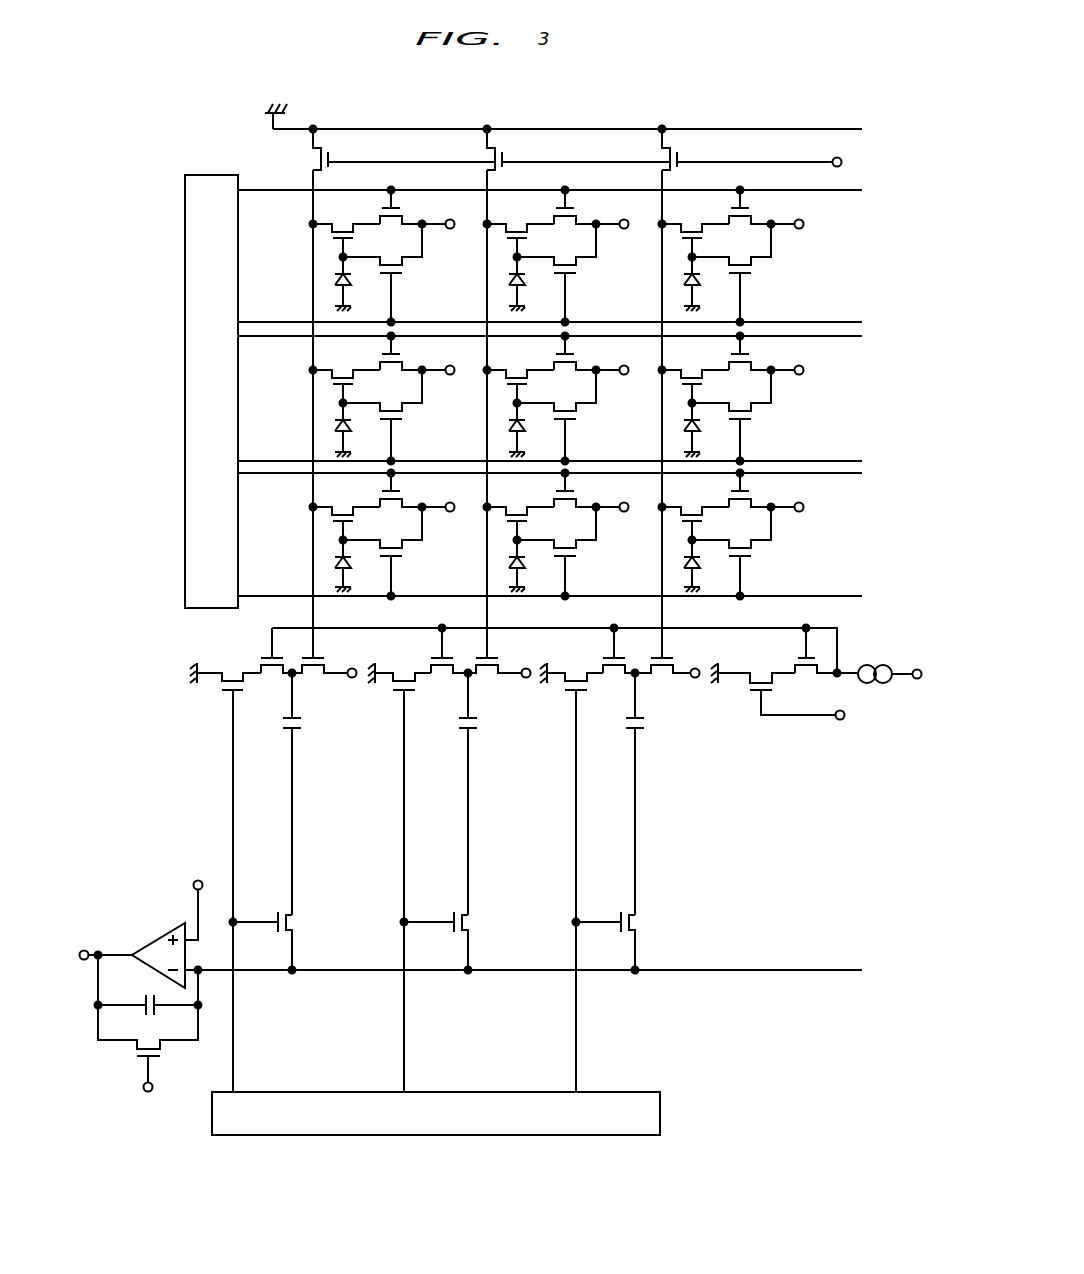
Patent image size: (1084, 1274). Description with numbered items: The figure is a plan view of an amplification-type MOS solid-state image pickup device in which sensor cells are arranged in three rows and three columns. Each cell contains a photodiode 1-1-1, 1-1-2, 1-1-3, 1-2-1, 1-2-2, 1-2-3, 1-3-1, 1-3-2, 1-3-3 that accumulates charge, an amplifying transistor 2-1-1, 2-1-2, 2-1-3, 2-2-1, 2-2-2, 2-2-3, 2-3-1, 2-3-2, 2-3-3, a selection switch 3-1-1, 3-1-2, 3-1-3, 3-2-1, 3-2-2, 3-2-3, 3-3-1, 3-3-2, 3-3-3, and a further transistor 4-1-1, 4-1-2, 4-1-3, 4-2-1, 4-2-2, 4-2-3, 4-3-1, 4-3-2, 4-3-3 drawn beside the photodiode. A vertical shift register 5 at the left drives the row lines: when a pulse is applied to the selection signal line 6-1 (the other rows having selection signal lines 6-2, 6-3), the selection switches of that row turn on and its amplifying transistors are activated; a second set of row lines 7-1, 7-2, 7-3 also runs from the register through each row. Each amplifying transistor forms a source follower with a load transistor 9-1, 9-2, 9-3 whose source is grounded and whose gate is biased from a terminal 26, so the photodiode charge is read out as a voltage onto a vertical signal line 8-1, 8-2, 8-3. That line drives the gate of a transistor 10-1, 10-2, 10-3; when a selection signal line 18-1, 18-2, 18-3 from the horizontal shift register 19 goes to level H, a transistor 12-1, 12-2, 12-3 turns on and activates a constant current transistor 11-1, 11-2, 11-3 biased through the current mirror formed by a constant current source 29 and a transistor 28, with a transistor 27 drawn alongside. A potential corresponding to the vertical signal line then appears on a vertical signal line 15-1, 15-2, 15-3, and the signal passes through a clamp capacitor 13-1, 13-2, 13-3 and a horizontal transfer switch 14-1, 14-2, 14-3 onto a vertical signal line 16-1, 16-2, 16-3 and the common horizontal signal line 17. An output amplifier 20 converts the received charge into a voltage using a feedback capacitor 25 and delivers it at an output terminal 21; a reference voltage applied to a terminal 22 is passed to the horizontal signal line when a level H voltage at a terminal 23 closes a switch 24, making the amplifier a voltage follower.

The photodiode 1-1-1 is at (348, 287).
The photodiode 1-1-2 is at (522, 287).
The photodiode 1-1-3 is at (697, 287).
The photodiode 1-2-1 is at (348, 433).
The photodiode 1-2-2 is at (522, 433).
The photodiode 1-2-3 is at (697, 433).
The photodiode 1-3-1 is at (348, 570).
The photodiode 1-3-2 is at (522, 570).
The photodiode 1-3-3 is at (697, 570).
The amplifying transistor 2-1-1 is at (343, 231).
The amplifying transistor 2-1-2 is at (517, 231).
The amplifying transistor 2-1-3 is at (692, 231).
The amplifying transistor 2-2-1 is at (343, 377).
The amplifying transistor 2-2-2 is at (517, 377).
The amplifying transistor 2-2-3 is at (692, 377).
The amplifying transistor 2-3-1 is at (343, 514).
The amplifying transistor 2-3-2 is at (517, 514).
The amplifying transistor 2-3-3 is at (692, 514).
The selection switch 3-1-1 is at (403, 207).
The selection switch 3-1-2 is at (577, 207).
The selection switch 3-1-3 is at (752, 207).
The selection switch 3-2-1 is at (403, 353).
The selection switch 3-2-2 is at (577, 353).
The selection switch 3-2-3 is at (752, 353).
The selection switch 3-3-1 is at (403, 490).
The selection switch 3-3-2 is at (577, 490).
The selection switch 3-3-3 is at (752, 490).
The amplifying transistor 4-1-1 is at (403, 263).
The amplifying transistor 4-1-2 is at (577, 263).
The amplifying transistor 4-1-3 is at (752, 263).
The amplifying transistor 4-2-1 is at (403, 409).
The amplifying transistor 4-2-2 is at (577, 409).
The amplifying transistor 4-2-3 is at (752, 409).
The amplifying transistor 4-3-1 is at (403, 546).
The amplifying transistor 4-3-2 is at (577, 546).
The amplifying transistor 4-3-3 is at (752, 546).
The vertical shift register 5 is at (207, 174).
The selection signal line 6-1 is at (277, 193).
The selection signal line 6-2 is at (277, 339).
The selection signal line 6-3 is at (277, 476).
The reset line 7-1 is at (277, 320).
The reset line 7-2 is at (277, 459).
The reset line 7-3 is at (277, 594).
The vertical signal line 8-1 is at (316, 612).
The vertical signal line 8-2 is at (490, 612).
The vertical signal line 8-3 is at (665, 612).
The load transistor 9-1 is at (331, 153).
The load transistor 9-2 is at (505, 153).
The load transistor 9-3 is at (680, 153).
The transistor 10-1 is at (313, 676).
The transistor 10-2 is at (487, 676).
The transistor 10-3 is at (662, 676).
The constant current transistor 11-1 is at (270, 677).
The constant current transistor 11-2 is at (440, 677).
The constant current transistor 11-3 is at (612, 677).
The transistor 12-1 is at (234, 684).
The transistor 12-2 is at (405, 684).
The transistor 12-3 is at (577, 684).
The clamp capacitor 13-1 is at (297, 731).
The clamp capacitor 13-2 is at (473, 731).
The clamp capacitor 13-3 is at (640, 731).
The horizontal transfer switch 14-1 is at (294, 922).
The horizontal transfer switch 14-2 is at (470, 922).
The horizontal transfer switch 14-3 is at (637, 922).
The vertical signal line 15-1 is at (302, 716).
The vertical signal line 15-2 is at (478, 716).
The vertical signal line 15-3 is at (645, 716).
The vertical signal line 16-1 is at (294, 831).
The vertical signal line 16-2 is at (470, 831).
The vertical signal line 16-3 is at (637, 831).
The common horizontal signal line 17 is at (258, 973).
The selection signal line 18-1 is at (236, 1065).
The selection signal line 18-2 is at (407, 1065).
The selection signal line 18-3 is at (579, 1065).
The horizontal shift register 19 is at (662, 1105).
The output amplifier 20 is at (149, 941).
The output terminal 21 is at (84, 949).
The terminal 22 is at (198, 881).
The terminal 23 is at (148, 1092).
The switch 24 is at (154, 1058).
The feedback capacitor 25 is at (156, 1010).
The terminal 26 is at (843, 159).
The reset transistor 27 is at (760, 683).
The transistor 28 is at (805, 675).
The constant current source 29 is at (875, 663).